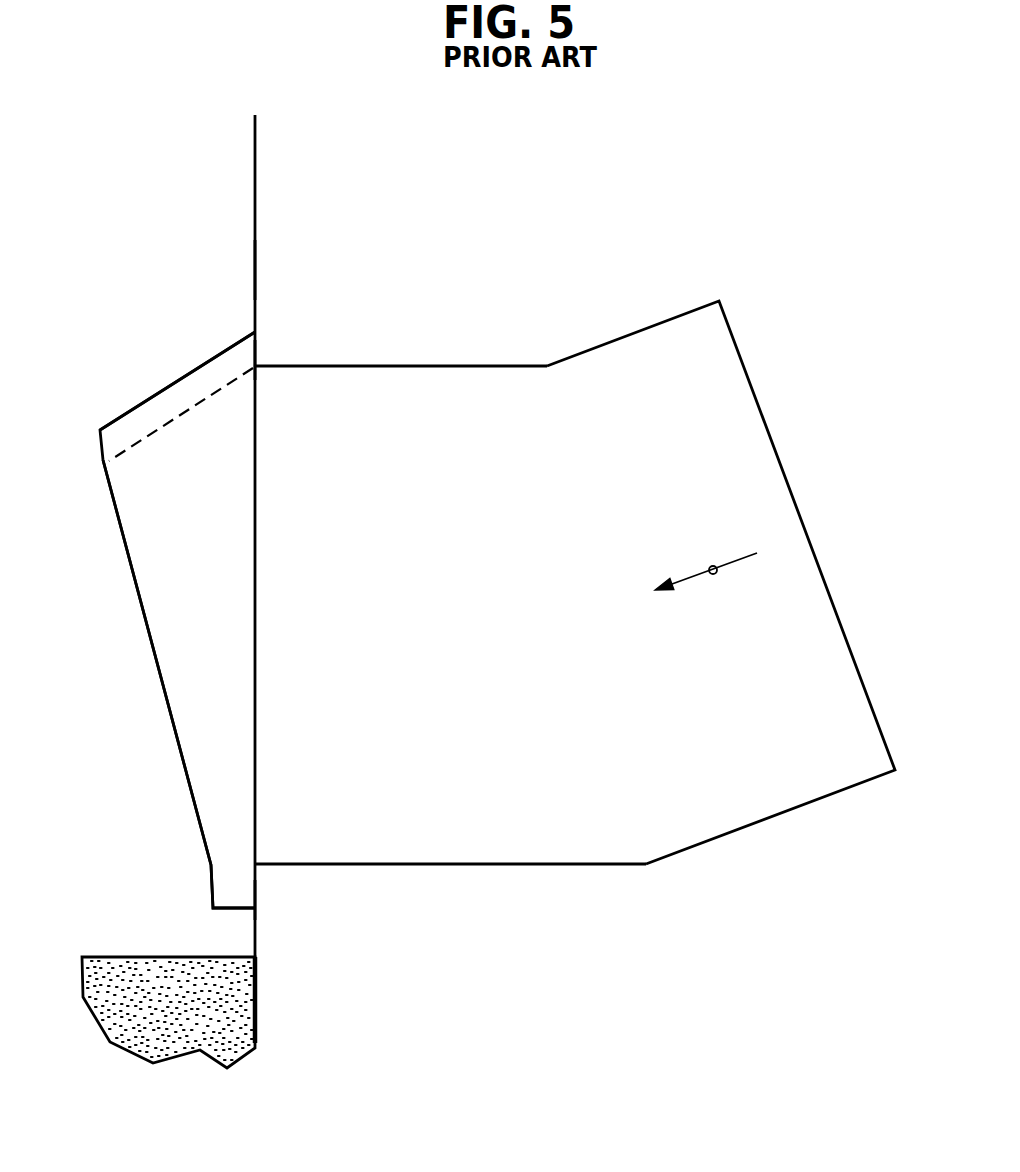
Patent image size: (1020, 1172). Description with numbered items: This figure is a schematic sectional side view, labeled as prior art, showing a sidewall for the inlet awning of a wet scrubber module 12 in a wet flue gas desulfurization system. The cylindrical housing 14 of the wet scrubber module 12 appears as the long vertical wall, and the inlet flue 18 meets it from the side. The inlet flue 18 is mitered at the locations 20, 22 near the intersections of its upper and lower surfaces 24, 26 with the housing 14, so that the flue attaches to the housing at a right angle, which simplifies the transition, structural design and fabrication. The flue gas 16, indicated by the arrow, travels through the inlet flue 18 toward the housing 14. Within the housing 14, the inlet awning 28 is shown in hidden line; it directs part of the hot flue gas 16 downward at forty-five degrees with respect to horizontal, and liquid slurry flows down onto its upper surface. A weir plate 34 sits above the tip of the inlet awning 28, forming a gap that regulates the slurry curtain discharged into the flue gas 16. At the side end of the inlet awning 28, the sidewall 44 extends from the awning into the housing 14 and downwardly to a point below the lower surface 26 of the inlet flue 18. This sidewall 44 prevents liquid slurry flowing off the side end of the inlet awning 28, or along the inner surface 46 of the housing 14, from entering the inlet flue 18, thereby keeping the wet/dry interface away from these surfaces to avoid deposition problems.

The wet scrubber module 12 is at (77, 692).
The cylindrical housing 14 is at (255, 210).
The flue gas 16 is at (713, 570).
The inlet flue 18 is at (524, 823).
The location 20 is at (285, 344).
The location 22 is at (286, 909).
The upper surface 24 is at (513, 366).
The lower surface 26 is at (577, 864).
The inlet awning 28 is at (168, 420).
The weir plate 34 is at (100, 445).
The sidewall 44 is at (188, 700).
The inner surface 46 is at (255, 273).